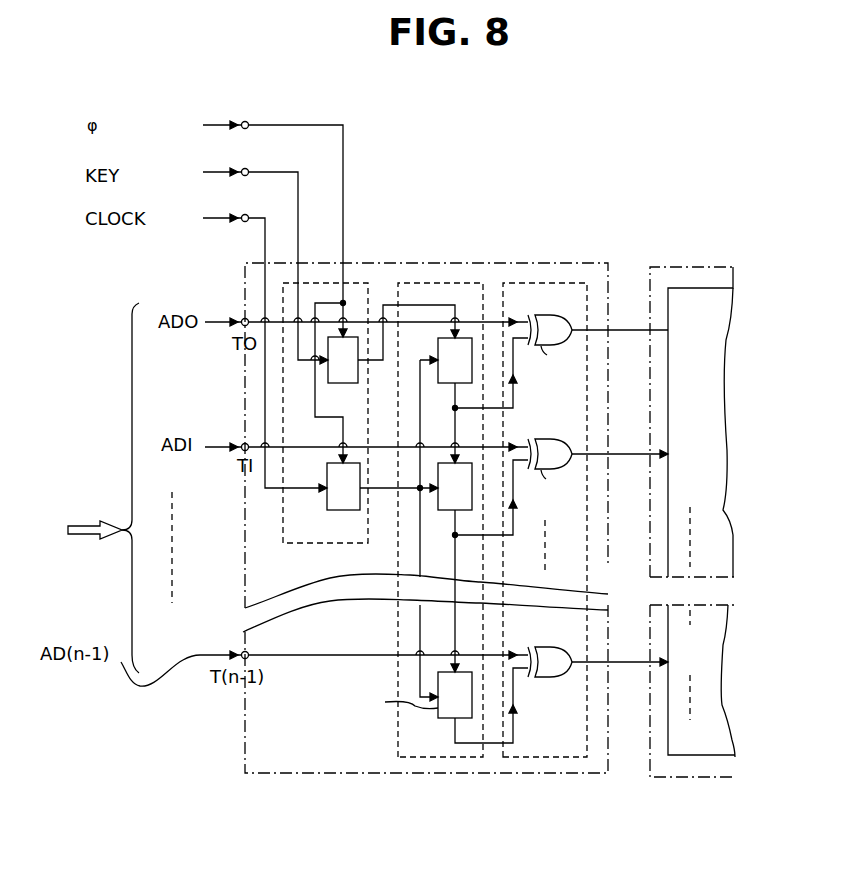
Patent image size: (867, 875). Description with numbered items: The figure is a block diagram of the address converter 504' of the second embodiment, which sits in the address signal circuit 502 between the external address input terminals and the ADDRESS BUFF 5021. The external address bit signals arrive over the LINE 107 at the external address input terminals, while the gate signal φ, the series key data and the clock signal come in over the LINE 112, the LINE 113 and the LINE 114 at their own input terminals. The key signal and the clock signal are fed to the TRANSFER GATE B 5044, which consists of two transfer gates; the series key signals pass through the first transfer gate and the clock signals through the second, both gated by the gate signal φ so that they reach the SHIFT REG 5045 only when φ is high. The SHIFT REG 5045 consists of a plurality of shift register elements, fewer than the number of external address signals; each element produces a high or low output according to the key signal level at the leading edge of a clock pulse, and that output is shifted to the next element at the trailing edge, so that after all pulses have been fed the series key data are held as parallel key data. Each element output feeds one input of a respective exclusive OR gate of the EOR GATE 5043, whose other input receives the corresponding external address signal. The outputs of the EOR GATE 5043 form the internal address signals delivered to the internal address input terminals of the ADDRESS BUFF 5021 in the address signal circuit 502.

The LINE 112 is at (212, 124).
The LINE 113 is at (212, 171).
The LINE 114 is at (212, 217).
The LINE 107 is at (76, 520).
The address converter 504' is at (426, 481).
The address signal circuit 502 is at (665, 265).
The ADDRESS BUFF 5021 is at (713, 288).
The TRANSFER GATE B 5044 is at (357, 281).
The SHIFT REG 5045 is at (452, 283).
The EOR GATE 5043 is at (540, 283).